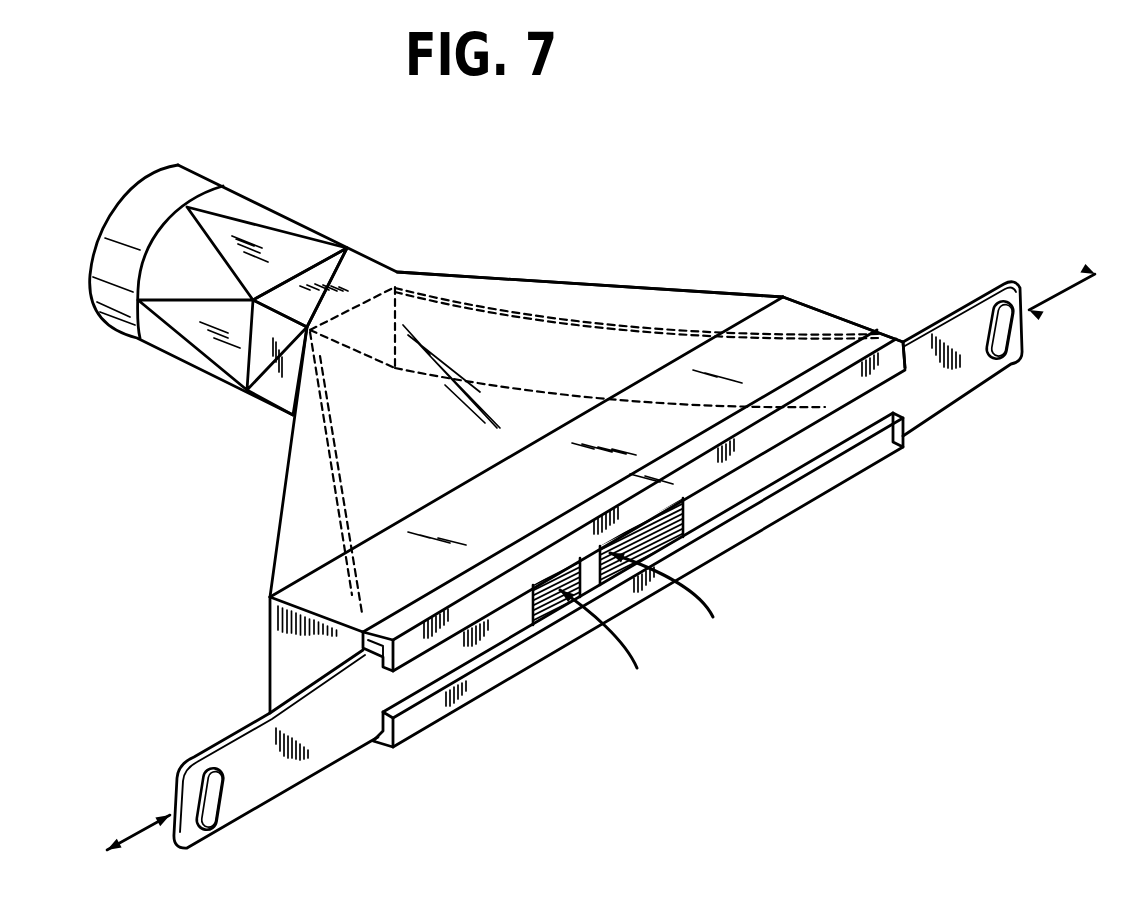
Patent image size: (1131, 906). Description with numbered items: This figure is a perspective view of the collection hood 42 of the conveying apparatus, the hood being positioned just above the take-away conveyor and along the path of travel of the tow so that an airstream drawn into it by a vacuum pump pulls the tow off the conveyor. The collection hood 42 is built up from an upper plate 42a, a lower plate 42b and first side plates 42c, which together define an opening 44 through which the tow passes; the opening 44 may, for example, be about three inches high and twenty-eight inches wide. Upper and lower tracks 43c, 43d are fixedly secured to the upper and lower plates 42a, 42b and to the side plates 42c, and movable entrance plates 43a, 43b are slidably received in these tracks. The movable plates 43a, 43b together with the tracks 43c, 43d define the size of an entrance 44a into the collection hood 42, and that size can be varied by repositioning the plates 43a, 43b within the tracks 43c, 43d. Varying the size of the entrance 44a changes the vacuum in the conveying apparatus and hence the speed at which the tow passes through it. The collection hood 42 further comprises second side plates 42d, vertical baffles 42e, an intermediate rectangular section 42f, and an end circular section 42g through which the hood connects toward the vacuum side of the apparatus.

The collection hood 42 is at (560, 298).
The upper plate 42a is at (723, 300).
The lower plate 42b is at (425, 415).
The first side plates 42c is at (290, 654).
The second side plates 42d is at (277, 540).
The vertical baffles 42e is at (780, 330).
The intermediate rectangular section 42f is at (353, 272).
The end circular section 42g is at (137, 200).
The movable entrance plate 43a is at (317, 743).
The movable entrance plate 43b is at (943, 383).
The upper track 43c is at (770, 432).
The lower track 43d is at (742, 527).
The opening 44 is at (573, 597).
The entrance 44a is at (635, 574).